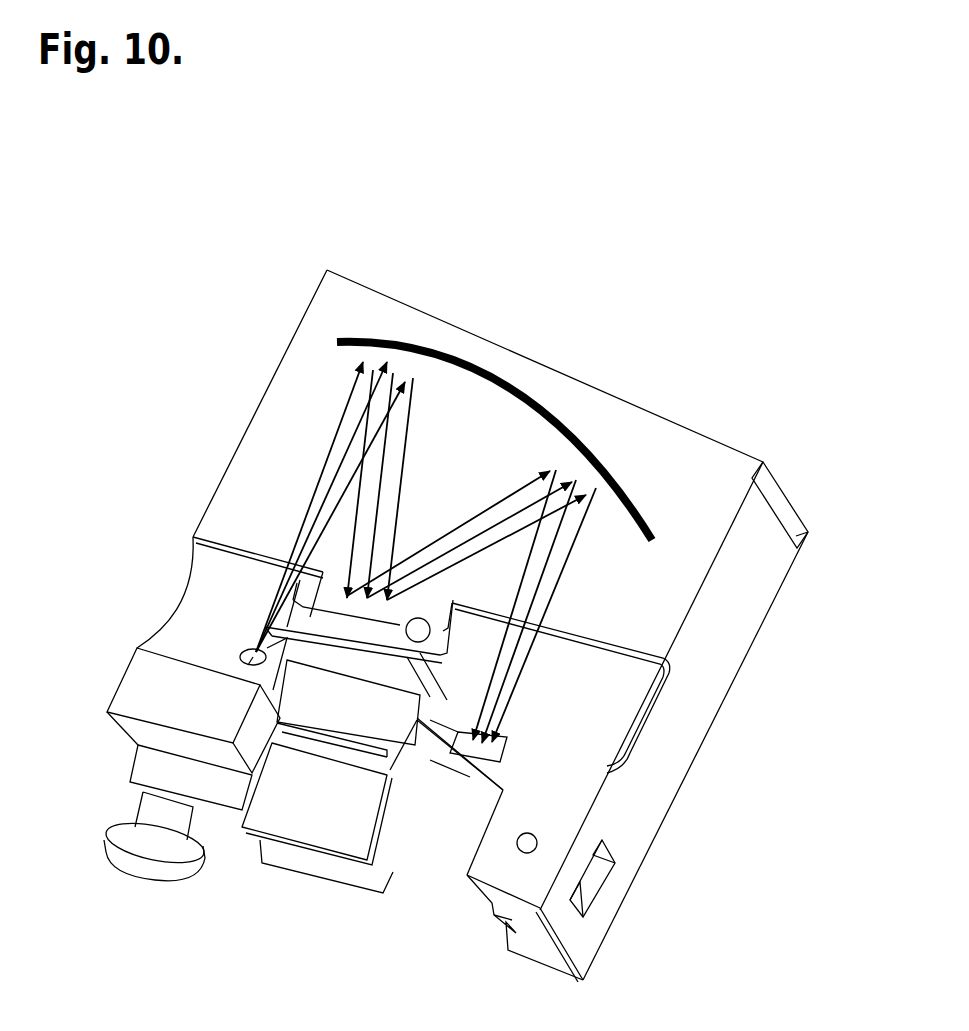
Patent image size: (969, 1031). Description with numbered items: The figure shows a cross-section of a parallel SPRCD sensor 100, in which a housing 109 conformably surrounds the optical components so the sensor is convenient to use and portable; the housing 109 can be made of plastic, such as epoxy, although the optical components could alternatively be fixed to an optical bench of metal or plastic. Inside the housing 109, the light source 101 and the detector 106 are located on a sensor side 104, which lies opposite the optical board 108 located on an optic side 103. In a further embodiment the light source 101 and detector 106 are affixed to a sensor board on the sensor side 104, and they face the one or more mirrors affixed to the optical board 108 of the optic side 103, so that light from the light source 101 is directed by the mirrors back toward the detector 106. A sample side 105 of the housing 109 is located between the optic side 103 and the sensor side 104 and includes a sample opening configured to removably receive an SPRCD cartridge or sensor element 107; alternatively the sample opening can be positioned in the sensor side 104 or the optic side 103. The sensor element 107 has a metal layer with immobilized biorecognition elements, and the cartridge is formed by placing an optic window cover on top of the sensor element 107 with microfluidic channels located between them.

The parallel SPRCD sensor 100 is at (236, 160).
The light source 101 is at (245, 655).
The optic side 103 is at (787, 488).
The sensor side 104 is at (457, 807).
The sample side 105 is at (653, 600).
The detector 106 is at (510, 737).
The sensor element 107 is at (337, 660).
The optical board 108 is at (330, 358).
The housing 109 is at (503, 350).